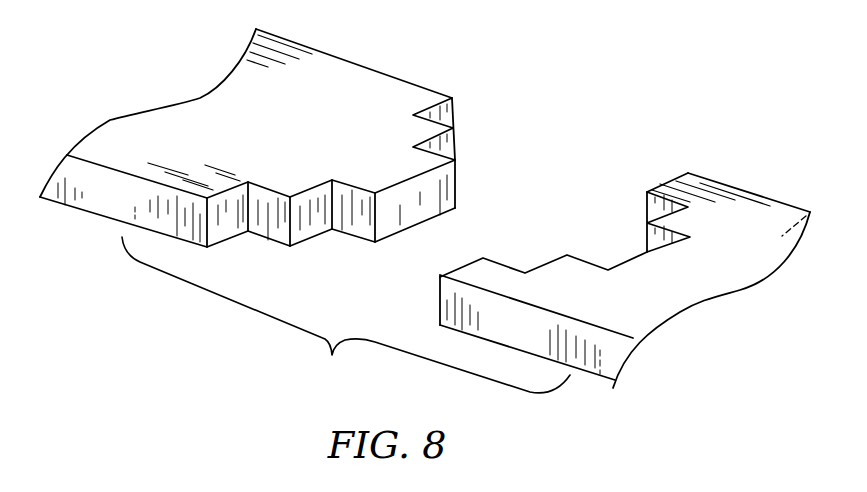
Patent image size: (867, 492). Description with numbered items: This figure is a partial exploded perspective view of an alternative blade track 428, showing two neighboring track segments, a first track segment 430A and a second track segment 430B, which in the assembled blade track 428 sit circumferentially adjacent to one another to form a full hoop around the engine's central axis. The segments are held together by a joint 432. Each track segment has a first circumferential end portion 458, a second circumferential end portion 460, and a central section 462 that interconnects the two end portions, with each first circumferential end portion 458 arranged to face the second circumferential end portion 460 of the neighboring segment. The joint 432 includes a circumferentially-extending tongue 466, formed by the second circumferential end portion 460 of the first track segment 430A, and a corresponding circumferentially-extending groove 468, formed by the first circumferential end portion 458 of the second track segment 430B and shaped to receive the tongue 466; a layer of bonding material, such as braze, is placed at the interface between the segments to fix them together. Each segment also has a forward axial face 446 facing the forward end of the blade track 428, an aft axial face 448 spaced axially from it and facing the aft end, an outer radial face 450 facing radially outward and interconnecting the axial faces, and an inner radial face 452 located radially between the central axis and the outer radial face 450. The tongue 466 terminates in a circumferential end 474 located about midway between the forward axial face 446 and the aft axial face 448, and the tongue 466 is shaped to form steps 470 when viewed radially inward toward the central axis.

The blade track 428 is at (696, 78).
The first track segment 430A is at (298, 76).
The second track segment 430B is at (758, 210).
The joint 432 is at (545, 99).
The forward axial face 446 is at (112, 205).
The aft axial face 448 is at (349, 78).
The outer radial face 450 is at (122, 147).
The inner radial face 452 is at (135, 222).
The first circumferential end portion 458 is at (748, 208).
The second circumferential end portion 460 is at (422, 97).
The central section 462 is at (200, 115).
The circumferentially-extending tongue 466 is at (317, 252).
The circumferentially-extending groove 468 is at (626, 204).
The steps 470 is at (310, 198).
The circumferential end 474 is at (493, 186).